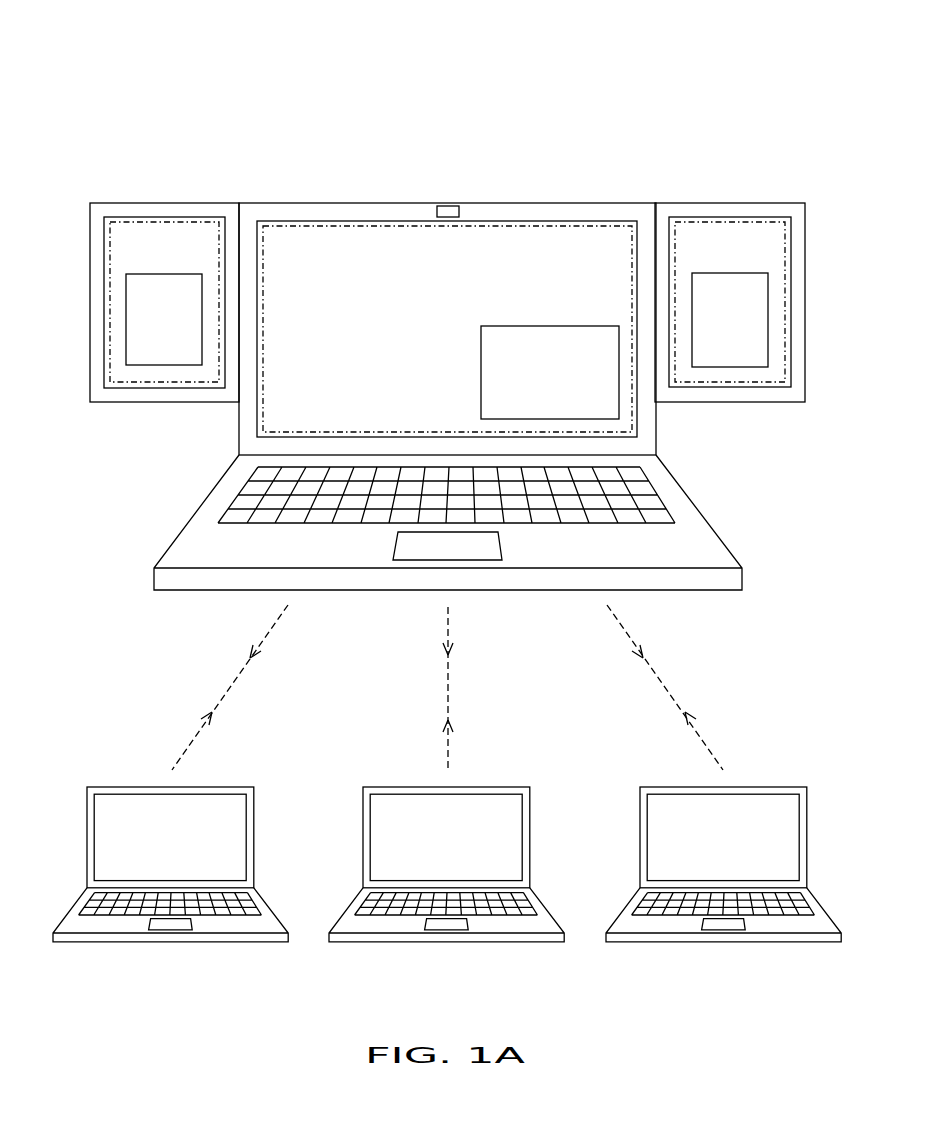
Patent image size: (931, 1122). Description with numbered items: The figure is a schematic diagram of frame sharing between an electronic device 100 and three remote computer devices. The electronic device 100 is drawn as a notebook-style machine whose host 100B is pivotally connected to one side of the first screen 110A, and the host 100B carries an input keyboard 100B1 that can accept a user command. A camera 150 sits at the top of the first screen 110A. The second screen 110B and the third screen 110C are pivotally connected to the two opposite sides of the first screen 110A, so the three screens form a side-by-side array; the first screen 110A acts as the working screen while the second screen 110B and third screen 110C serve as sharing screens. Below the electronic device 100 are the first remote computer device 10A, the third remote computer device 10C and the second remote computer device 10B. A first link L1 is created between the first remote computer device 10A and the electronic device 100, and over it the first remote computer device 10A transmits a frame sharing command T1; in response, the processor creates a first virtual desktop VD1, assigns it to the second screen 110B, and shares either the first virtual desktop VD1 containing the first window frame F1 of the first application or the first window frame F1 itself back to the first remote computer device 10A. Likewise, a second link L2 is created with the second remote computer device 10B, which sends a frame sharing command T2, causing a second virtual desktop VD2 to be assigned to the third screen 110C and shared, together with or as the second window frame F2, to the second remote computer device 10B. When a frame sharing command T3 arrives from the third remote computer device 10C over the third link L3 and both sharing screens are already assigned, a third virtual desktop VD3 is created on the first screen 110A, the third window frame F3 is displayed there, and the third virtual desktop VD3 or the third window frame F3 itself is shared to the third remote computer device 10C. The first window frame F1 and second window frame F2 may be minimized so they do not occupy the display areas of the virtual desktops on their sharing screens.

The electronic device 100 is at (367, 65).
The first screen 110A is at (505, 203).
The second screen 110B is at (687, 203).
The third screen 110C is at (196, 203).
The camera 150 is at (447, 206).
The host 100B is at (723, 547).
The input keyboard 100B1 is at (653, 493).
The first virtual desktop VD1 is at (130, 217).
The second virtual desktop VD2 is at (777, 217).
The third virtual desktop VD3 is at (597, 221).
The first window frame F1 is at (126, 318).
The second window frame F2 is at (768, 318).
The third window frame F3 is at (480, 355).
The first link L1 is at (228, 685).
The second link L2 is at (665, 687).
The third link L3 is at (450, 690).
The frame sharing command T1 is at (163, 737).
The frame sharing command T2 is at (666, 737).
The frame sharing command T3 is at (421, 737).
The first remote computer device 10A is at (218, 787).
The second remote computer device 10B is at (645, 787).
The third remote computer device 10C is at (475, 787).